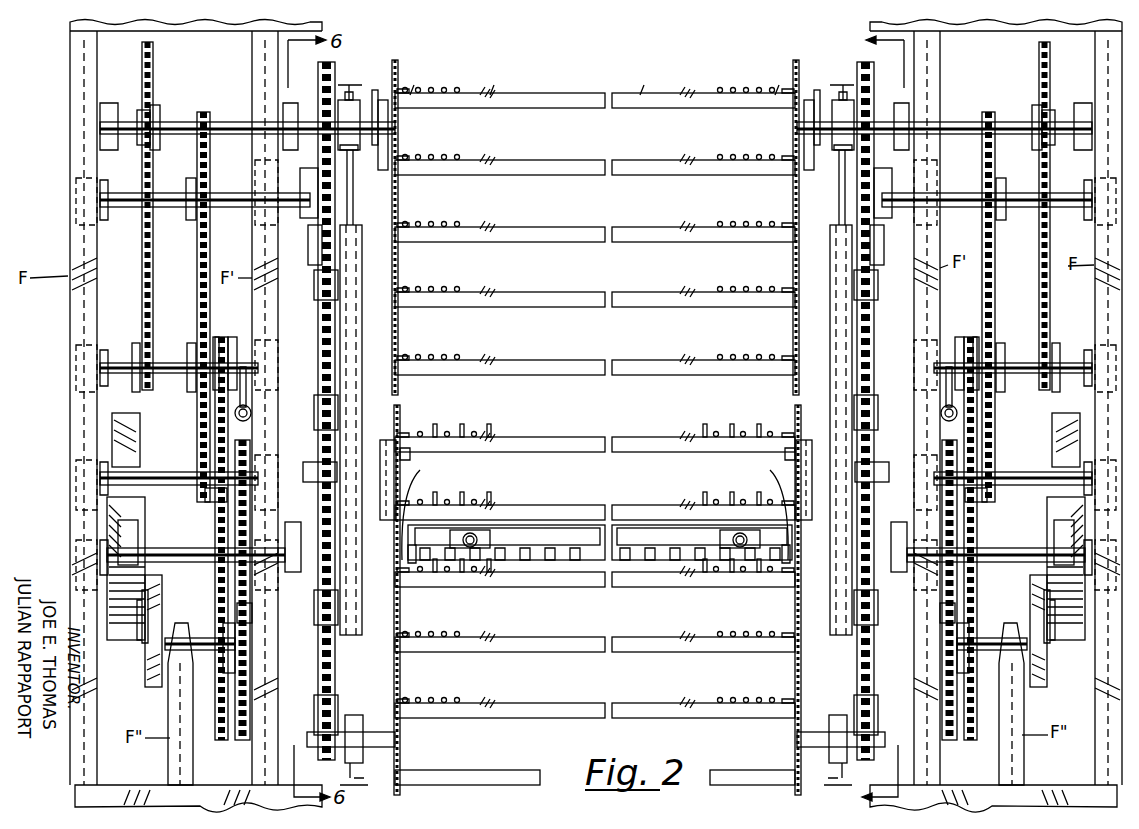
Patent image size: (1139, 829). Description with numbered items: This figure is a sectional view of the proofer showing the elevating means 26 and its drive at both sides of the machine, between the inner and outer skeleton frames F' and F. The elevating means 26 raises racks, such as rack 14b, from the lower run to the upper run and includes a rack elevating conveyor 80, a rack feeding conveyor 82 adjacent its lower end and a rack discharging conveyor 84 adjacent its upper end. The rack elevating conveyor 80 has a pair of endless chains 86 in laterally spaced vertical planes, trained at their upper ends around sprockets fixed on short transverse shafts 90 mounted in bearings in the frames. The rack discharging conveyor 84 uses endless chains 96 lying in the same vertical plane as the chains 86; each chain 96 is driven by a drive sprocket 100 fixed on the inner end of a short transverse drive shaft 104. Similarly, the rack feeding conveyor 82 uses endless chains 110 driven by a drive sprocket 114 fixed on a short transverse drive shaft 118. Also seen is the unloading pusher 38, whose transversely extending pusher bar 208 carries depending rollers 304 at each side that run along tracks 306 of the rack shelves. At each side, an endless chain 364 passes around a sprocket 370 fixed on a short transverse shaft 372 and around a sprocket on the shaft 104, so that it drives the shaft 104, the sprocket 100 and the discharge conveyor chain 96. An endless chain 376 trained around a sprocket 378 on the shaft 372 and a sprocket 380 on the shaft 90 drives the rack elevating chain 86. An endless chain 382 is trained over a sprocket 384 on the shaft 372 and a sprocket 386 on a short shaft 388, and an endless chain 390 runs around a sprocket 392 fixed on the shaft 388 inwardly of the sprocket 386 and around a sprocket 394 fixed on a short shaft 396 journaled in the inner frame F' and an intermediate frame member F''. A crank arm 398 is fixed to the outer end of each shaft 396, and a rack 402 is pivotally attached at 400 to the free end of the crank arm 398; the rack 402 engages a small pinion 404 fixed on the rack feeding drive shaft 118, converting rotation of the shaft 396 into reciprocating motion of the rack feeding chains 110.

The rack 14b is at (542, 92).
The elevating means 26 is at (873, 338).
The unloading pusher 38 is at (565, 560).
The rack elevating conveyor 80 is at (876, 412).
The rack feeding conveyor 82 is at (878, 608).
The rack discharging conveyor 84 is at (878, 268).
The endless chains 86 is at (862, 88).
The short transverse shafts 90 is at (975, 122).
The endless chains 96 is at (880, 275).
The drive sprocket 100 is at (890, 170).
The short transverse drive shaft 104 is at (1015, 193).
The endless chains 110 is at (876, 690).
The drive sprocket 114 is at (890, 522).
The short transverse drive shaft 118 is at (1003, 562).
The pusher bar 208 is at (645, 560).
The depending rollers 304 is at (595, 510).
The tracks 306 is at (785, 568).
The endless chain 364 is at (992, 290).
The sprocket 370 is at (1005, 343).
The short transverse shaft 372 is at (1020, 373).
The endless chain 376 is at (1050, 265).
The sprocket 378 is at (1060, 343).
The sprocket 380 is at (1035, 103).
The endless chain 382 is at (985, 520).
The sprocket 384 is at (970, 340).
The sprocket 386 is at (975, 496).
The short shaft 388 is at (1036, 472).
The endless chain 390 is at (950, 608).
The sprocket 392 is at (945, 448).
The sprocket 394 is at (965, 632).
The short shaft 396 is at (983, 652).
The crank arm 398 is at (1040, 580).
The pivotal attachment 400 is at (1050, 630).
The rack 402 is at (1058, 440).
The pinion 404 is at (107, 528).